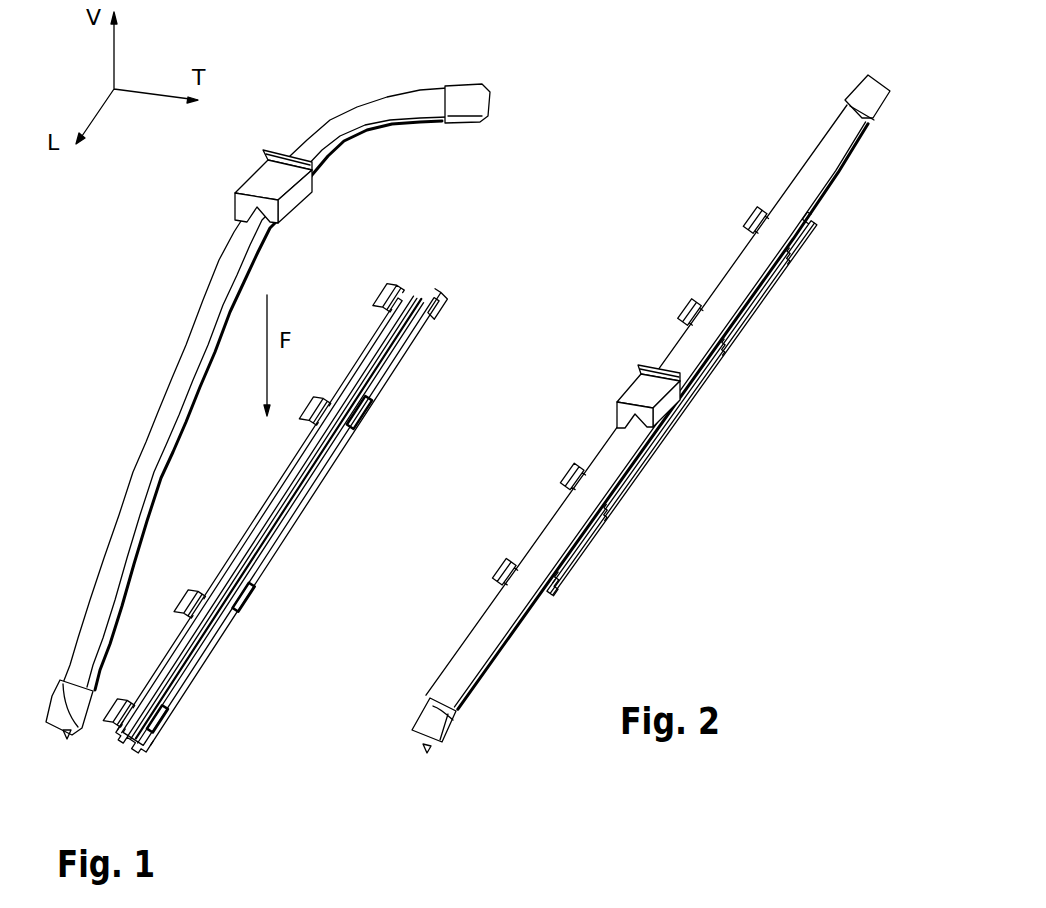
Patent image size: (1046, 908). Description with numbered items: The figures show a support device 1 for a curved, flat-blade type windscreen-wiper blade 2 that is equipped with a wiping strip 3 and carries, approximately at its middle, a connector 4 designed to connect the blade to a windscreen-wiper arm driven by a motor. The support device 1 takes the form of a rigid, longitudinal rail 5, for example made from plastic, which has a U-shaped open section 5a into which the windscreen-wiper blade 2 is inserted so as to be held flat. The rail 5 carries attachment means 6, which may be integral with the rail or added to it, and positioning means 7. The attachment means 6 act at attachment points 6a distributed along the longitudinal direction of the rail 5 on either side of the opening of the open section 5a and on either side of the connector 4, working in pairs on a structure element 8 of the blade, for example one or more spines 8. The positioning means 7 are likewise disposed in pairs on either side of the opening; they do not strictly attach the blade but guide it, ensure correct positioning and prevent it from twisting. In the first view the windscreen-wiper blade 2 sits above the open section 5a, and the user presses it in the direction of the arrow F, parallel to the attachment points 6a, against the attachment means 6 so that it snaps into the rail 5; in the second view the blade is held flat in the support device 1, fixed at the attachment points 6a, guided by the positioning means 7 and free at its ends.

In FIG. 1, the support device 1 is at (291, 531).
In FIG. 2, the support device 1 is at (651, 414).
In FIG. 1, the windscreen-wiper blade 2 is at (268, 384).
In FIG. 2, the windscreen-wiper blade 2 is at (808, 140).
In FIG. 1, the wiping strip 3 is at (394, 122).
In FIG. 1, the connector 4 is at (228, 178).
In FIG. 2, the connector 4 is at (613, 387).
In FIG. 1, the rail 5 is at (210, 669).
In FIG. 2, the rail 5 is at (790, 283).
In FIG. 1, the open section 5a is at (420, 296).
In FIG. 1, the attachment means 6 is at (242, 601).
In FIG. 2, the attachment means 6 is at (570, 470).
In FIG. 1, the attachment points 6a is at (384, 418).
In FIG. 1, the positioning means 7 is at (163, 720).
In FIG. 2, the positioning means 7 is at (560, 577).
In FIG. 1, the structure element 8 is at (338, 134).
In FIG. 2, the structure element 8 is at (592, 524).